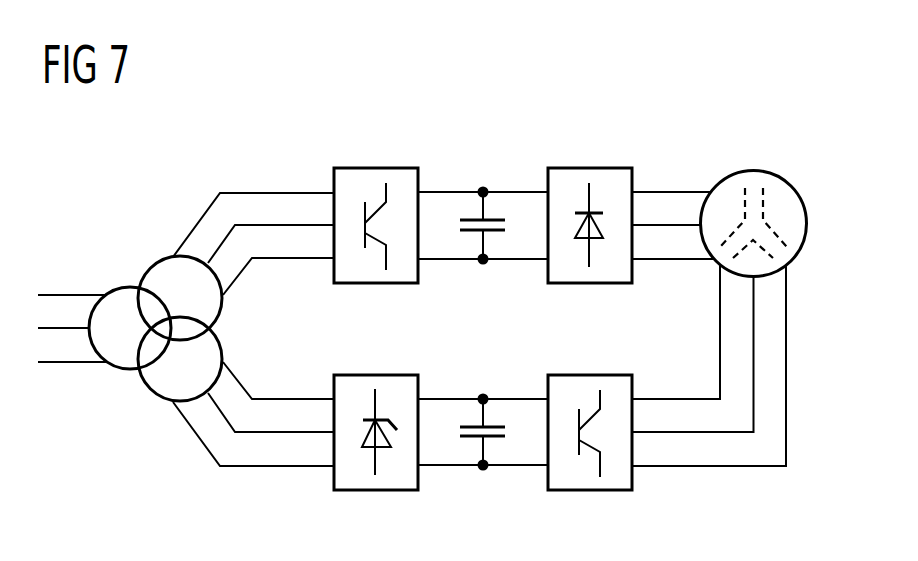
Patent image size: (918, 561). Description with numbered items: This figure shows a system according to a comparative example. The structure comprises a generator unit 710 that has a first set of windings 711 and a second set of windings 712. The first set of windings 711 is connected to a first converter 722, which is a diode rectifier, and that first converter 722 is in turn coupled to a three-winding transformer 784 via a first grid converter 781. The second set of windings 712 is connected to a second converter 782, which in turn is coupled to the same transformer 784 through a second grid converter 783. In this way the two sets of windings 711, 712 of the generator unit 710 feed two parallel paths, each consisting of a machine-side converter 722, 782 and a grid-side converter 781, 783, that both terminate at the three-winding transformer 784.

The generator unit 710 is at (748, 172).
The first set of windings 711 is at (670, 190).
The second set of windings 712 is at (670, 397).
The first converter (diode rectifier) 722 is at (589, 168).
The first grid converter 781 is at (375, 168).
The second converter 782 is at (589, 375).
The second grid converter 783 is at (375, 375).
The 3-winding transformer 784 is at (125, 287).